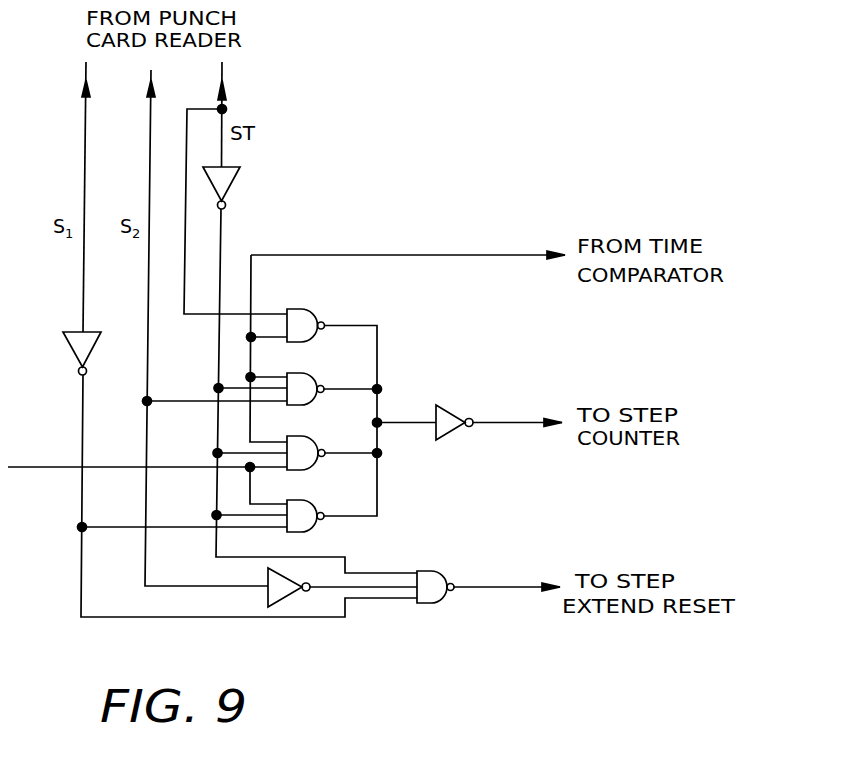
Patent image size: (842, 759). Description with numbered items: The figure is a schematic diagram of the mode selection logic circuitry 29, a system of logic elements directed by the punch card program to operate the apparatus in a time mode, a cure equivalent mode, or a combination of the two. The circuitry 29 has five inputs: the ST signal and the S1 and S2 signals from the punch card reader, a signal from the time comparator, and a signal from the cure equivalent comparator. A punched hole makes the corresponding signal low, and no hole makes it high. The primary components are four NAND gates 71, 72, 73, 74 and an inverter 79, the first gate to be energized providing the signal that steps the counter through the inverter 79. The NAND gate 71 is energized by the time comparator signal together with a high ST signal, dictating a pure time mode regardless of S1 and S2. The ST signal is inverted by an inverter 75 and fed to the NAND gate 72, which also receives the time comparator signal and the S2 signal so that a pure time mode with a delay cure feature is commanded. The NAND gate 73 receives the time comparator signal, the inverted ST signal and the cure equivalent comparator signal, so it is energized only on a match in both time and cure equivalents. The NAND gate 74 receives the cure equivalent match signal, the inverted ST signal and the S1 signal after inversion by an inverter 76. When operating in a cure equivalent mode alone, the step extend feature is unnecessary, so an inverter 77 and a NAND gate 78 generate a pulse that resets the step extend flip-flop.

The mode selection logic circuitry 29 is at (427, 227).
The NAND gate 71 is at (308, 309).
The NAND gate 72 is at (316, 375).
The NAND gate 73 is at (318, 441).
The NAND gate 74 is at (308, 503).
The inverter 75 is at (236, 178).
The inverter 76 is at (72, 350).
The inverter 77 is at (293, 573).
The NAND gate 78 is at (442, 571).
The inverter 79 is at (450, 410).